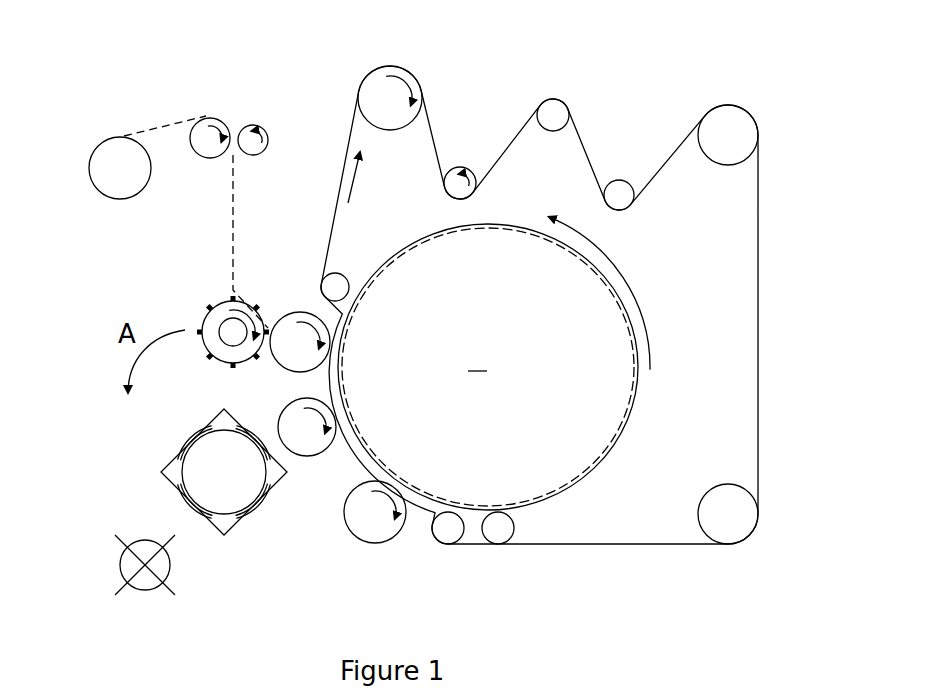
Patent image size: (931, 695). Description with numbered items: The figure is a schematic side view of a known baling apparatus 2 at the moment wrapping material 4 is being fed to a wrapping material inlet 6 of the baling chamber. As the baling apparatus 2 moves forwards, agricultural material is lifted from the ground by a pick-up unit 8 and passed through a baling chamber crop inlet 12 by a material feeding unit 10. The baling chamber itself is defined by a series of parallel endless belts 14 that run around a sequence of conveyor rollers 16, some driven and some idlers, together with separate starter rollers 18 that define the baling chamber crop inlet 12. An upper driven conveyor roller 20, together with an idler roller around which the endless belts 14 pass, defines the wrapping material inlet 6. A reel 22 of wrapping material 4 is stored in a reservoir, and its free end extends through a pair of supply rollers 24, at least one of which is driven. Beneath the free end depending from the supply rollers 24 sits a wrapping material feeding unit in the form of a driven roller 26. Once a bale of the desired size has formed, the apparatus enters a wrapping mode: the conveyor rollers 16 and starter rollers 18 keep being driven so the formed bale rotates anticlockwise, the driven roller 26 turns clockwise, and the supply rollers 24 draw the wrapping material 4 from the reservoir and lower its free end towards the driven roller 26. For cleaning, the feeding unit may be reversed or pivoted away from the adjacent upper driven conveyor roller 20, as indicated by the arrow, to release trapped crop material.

The baling apparatus 2 is at (600, 80).
The wrapping material 4 is at (233, 215).
The wrapping material inlet 6 is at (327, 310).
The pick-up unit 8 is at (120, 562).
The material feeding unit 10 is at (348, 463).
The baling chamber crop inlet 12 is at (208, 452).
The endless belts 14 is at (758, 315).
The conveyor rollers 16 is at (410, 72).
The starter rollers 18 is at (338, 442).
The upper driven conveyor roller 20 is at (305, 372).
The reel 22 is at (98, 192).
The supply rollers 24 is at (257, 125).
The driven roller 26 is at (202, 312).